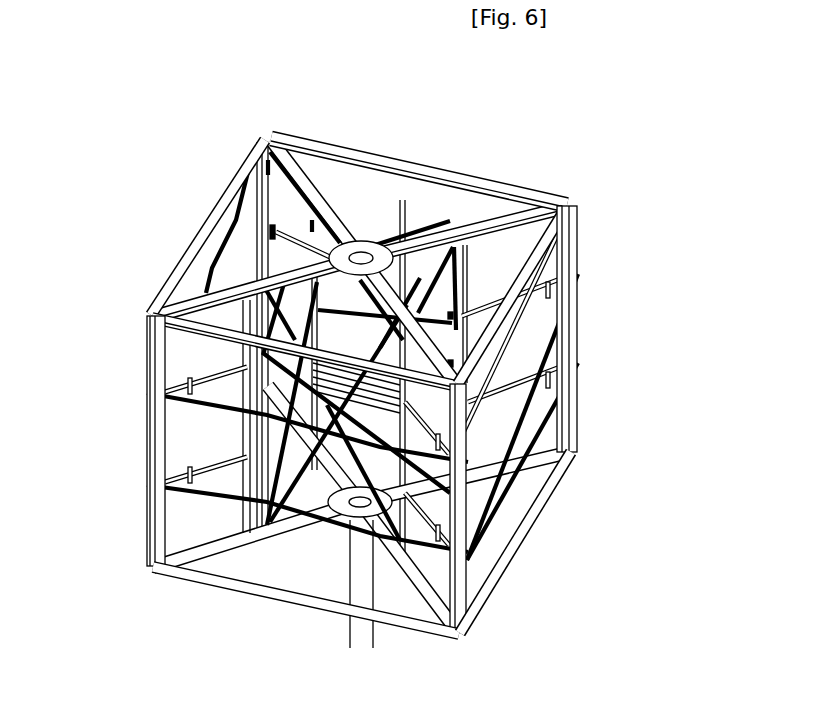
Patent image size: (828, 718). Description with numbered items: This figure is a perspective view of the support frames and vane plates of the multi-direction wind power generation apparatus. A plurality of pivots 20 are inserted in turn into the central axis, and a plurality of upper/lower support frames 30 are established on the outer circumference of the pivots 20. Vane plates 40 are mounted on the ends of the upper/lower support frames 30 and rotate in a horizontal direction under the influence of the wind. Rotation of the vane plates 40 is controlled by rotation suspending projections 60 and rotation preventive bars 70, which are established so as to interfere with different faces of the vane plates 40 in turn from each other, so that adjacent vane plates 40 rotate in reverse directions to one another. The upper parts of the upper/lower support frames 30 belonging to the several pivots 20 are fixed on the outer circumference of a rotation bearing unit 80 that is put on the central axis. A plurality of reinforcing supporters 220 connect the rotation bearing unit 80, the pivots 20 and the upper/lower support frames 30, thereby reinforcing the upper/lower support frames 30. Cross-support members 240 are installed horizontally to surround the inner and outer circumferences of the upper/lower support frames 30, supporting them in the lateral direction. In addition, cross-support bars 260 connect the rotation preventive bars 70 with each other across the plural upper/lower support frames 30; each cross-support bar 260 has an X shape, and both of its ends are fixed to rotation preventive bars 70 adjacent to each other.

The pivot 20 is at (365, 633).
The upper/lower support frame 30 is at (257, 142).
The vane plate 40 is at (185, 360).
The rotation suspending projection 60 is at (185, 558).
The rotation preventive bar 70 is at (255, 490).
The rotation bearing unit 80 is at (333, 248).
The reinforcing supporter 220 is at (393, 248).
The cross-support member 240 is at (577, 450).
The cross-support bar 260 is at (352, 530).